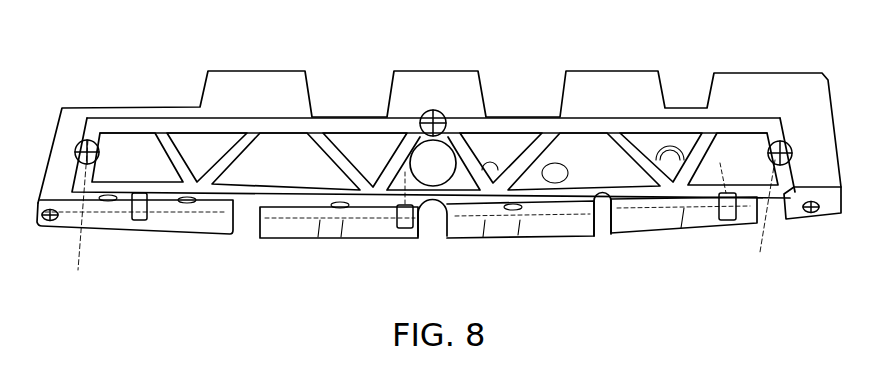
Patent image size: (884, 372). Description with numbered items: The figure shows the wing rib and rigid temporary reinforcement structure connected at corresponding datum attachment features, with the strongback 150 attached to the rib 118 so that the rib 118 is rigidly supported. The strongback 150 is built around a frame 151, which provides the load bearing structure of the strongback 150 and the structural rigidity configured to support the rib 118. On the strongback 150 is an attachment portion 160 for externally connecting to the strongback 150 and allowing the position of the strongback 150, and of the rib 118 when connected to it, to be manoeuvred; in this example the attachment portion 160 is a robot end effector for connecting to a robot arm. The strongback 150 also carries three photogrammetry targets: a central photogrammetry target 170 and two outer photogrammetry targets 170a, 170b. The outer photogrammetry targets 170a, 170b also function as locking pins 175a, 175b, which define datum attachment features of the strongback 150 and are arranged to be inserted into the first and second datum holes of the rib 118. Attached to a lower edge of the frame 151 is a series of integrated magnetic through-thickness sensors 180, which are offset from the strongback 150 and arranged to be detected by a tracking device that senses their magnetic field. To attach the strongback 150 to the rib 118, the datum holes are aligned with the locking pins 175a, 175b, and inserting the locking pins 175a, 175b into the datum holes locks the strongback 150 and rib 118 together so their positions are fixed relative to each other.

The rib 118 is at (610, 87).
The strongback 150 is at (157, 128).
The frame 151 is at (278, 128).
The attachment portion 160 is at (432, 165).
The central photogrammetry target 170 is at (437, 127).
The outer photogrammetry target 170a is at (82, 143).
The outer photogrammetry target 170b is at (783, 152).
The locking pin 175a is at (84, 218).
The locking pin 175b is at (769, 218).
The magnetic through-thickness sensor 180 is at (143, 210).